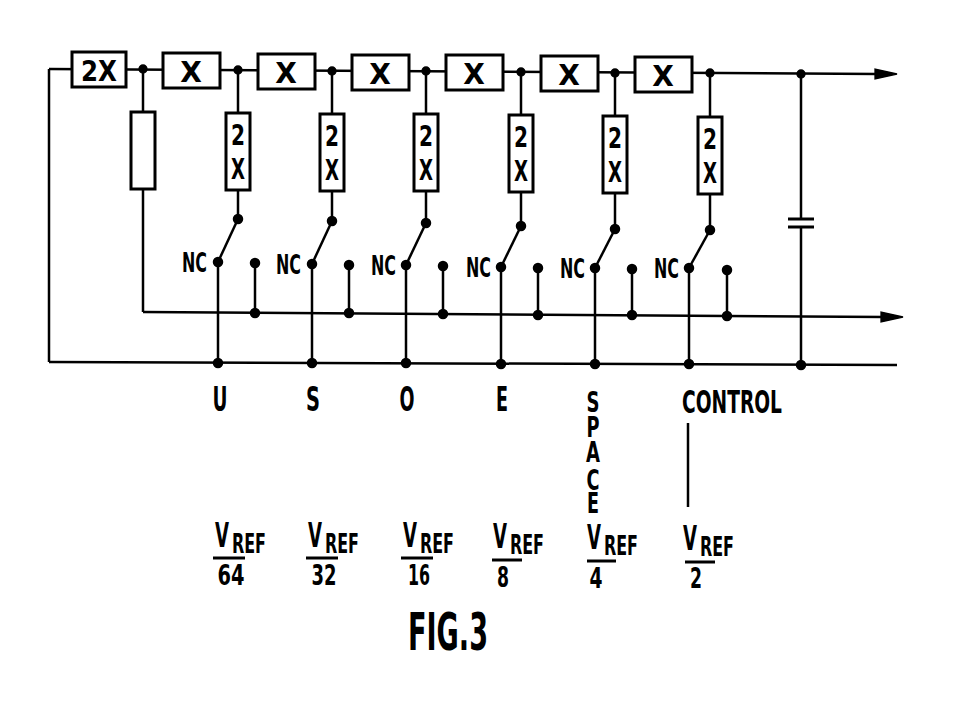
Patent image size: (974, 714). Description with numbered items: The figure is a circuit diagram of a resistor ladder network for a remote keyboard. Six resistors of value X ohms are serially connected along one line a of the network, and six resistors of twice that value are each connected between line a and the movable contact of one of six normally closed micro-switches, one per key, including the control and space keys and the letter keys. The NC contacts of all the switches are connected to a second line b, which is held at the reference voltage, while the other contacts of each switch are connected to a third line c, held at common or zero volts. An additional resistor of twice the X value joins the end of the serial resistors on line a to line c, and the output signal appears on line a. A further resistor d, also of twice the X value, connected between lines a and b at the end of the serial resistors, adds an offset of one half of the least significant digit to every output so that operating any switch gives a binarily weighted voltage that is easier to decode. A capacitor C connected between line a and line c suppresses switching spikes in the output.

The line a is at (839, 74).
The line b is at (831, 313).
The line c is at (830, 362).
The further resistor d is at (130, 153).
The capacitor C is at (811, 221).